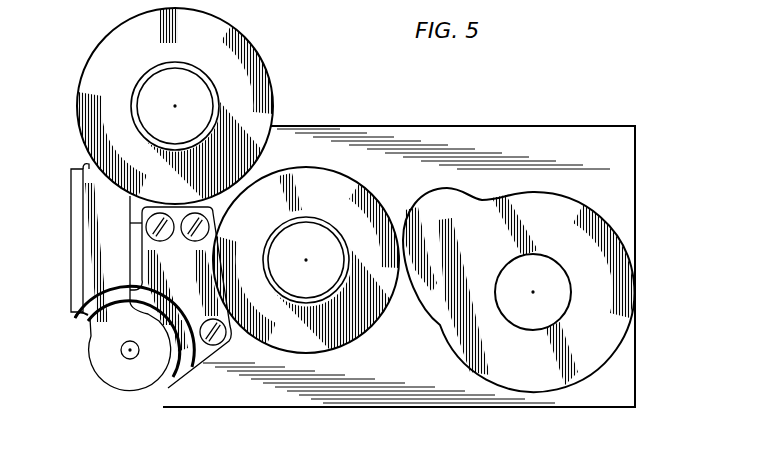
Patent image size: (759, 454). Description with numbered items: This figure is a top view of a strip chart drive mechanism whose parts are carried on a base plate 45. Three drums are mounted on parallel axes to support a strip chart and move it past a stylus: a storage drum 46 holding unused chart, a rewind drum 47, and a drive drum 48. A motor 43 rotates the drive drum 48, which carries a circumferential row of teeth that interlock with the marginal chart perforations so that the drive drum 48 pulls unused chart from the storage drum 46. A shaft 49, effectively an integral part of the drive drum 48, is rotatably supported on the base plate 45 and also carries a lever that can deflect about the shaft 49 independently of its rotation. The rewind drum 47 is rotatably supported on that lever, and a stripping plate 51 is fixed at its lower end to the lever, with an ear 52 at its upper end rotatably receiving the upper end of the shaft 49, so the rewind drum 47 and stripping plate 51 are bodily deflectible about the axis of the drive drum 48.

The motor 43 is at (613, 226).
The base plate 45 is at (490, 126).
The storage drum 46 is at (323, 218).
The rewind drum 47 is at (220, 93).
The drive drum 48 is at (72, 331).
The shaft 49 is at (121, 352).
The stripping plate 51 is at (83, 261).
The ear 52 is at (104, 389).